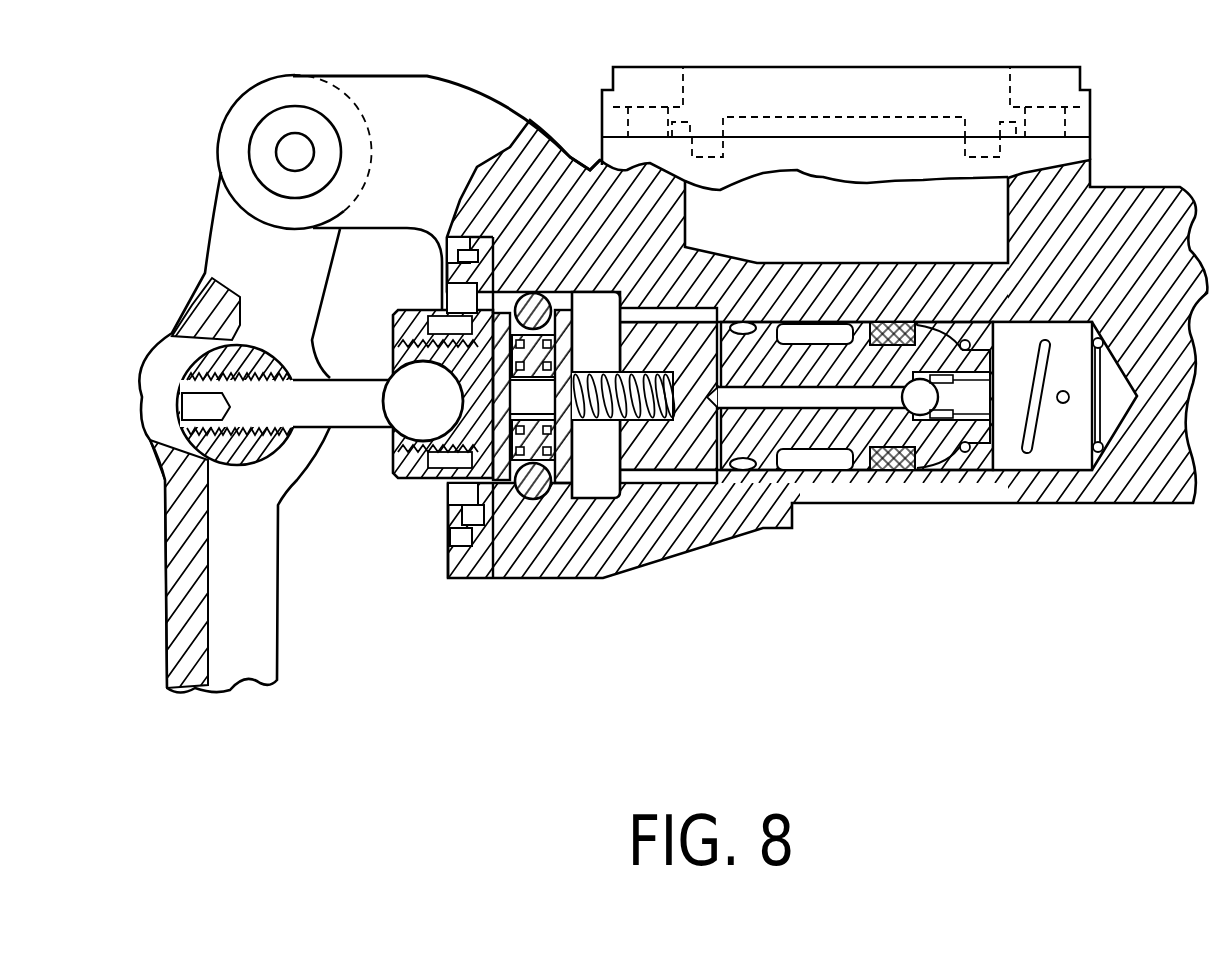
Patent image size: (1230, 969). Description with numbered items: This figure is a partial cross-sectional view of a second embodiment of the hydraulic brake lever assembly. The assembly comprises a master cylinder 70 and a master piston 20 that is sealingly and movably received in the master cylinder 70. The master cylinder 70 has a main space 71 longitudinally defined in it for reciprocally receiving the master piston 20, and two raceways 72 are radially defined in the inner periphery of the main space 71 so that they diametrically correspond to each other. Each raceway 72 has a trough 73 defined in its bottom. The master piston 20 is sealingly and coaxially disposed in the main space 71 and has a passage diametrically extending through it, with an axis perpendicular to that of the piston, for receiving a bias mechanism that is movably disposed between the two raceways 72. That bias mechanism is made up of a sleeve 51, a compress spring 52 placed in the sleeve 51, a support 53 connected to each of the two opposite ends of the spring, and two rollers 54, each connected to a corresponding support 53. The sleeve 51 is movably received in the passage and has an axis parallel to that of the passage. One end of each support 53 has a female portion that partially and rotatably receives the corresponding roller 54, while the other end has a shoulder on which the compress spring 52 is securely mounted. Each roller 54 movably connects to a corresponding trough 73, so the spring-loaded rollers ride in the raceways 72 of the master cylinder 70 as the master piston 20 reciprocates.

The master piston 20 is at (740, 263).
The sleeve 51 is at (585, 292).
The compress spring 52 is at (399, 310).
The support 53 is at (479, 287).
The roller 54 is at (530, 313).
The master cylinder 70 is at (724, 578).
The main space 71 is at (1003, 457).
The raceway 72 is at (622, 493).
The trough 73 is at (532, 503).